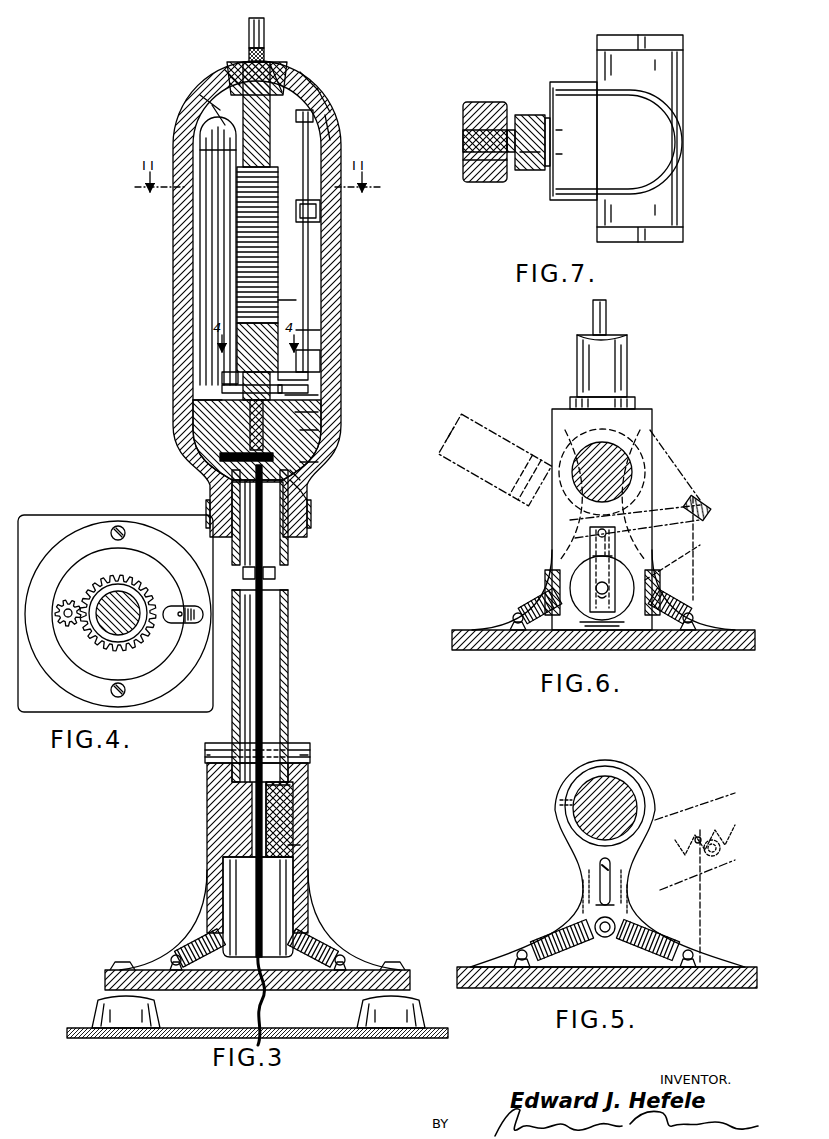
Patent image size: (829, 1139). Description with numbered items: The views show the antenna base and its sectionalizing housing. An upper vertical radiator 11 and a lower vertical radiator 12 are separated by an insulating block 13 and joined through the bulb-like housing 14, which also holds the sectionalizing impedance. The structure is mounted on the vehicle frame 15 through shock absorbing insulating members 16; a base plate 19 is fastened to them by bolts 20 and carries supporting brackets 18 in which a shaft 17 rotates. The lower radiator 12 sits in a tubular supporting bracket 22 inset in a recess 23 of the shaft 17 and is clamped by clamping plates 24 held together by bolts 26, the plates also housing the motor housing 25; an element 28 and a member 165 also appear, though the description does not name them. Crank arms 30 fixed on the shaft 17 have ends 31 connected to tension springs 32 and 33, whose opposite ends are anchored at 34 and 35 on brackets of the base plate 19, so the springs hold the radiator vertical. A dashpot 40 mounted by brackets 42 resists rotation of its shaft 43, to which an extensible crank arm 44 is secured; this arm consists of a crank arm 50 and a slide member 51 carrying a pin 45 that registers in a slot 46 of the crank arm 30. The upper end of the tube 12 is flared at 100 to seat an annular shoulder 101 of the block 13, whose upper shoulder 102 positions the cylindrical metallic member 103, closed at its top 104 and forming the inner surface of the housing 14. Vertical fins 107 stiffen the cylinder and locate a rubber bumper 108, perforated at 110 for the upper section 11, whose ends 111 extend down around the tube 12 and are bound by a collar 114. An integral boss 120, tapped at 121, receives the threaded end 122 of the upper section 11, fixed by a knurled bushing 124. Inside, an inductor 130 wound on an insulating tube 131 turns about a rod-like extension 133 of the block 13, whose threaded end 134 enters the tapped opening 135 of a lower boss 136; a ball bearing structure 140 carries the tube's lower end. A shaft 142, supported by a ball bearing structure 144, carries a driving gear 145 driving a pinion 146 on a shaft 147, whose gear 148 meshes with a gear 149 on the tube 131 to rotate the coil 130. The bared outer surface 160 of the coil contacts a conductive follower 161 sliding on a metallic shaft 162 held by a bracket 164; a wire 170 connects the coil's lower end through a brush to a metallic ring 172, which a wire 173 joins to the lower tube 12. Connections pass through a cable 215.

In FIG. 3, the upper vertical current radiator 11 is at (266, 26).
In FIG. 3, the lower vertical radiator 12 is at (290, 545).
In FIG. 6, the lower vertical radiator 12 is at (628, 352).
In FIG. 3, the insulating block 13 is at (322, 412).
In FIG. 4, the insulating block 13 is at (35, 710).
In FIG. 3, the bulb-like housing 14 is at (335, 300).
In FIG. 3, the frame 15 is at (180, 1030).
In FIG. 3, the shock absorbing insulating members 16 is at (98, 1002).
In FIG. 3, the shaft 17 is at (290, 800).
In FIG. 6, the shaft 17 is at (610, 460).
In FIG. 5, the shaft 17 is at (625, 790).
In FIG. 5, the supporting brackets 18 is at (655, 830).
In FIG. 3, the base plate 19 is at (408, 972).
In FIG. 6, the base plate 19 is at (712, 652).
In FIG. 5, the base plate 19 is at (748, 967).
In FIG. 3, the bolts 20 is at (120, 962).
In FIG. 3, the tubular supporting bracket 22 is at (290, 740).
In FIG. 6, the tubular supporting bracket 22 is at (634, 400).
In FIG. 3, the recess 23 is at (292, 786).
In FIG. 3, the clamping plates 24 is at (300, 845).
In FIG. 6, the clamping plates 24 is at (654, 415).
In FIG. 3, the motor housing 25 is at (225, 868).
In FIG. 3, the bolts 26 is at (312, 748).
In FIG. 3, the bore 28 is at (300, 828).
In FIG. 7, the crank arms 30 is at (488, 104).
In FIG. 6, the crank arms 30 is at (660, 450).
In FIG. 5, the crank arms 30 is at (632, 885).
In FIG. 5, the end of crank arm 31 is at (605, 938).
In FIG. 3, the tension spring 32 is at (200, 935).
In FIG. 6, the tension spring 32 is at (688, 602).
In FIG. 5, the tension spring 32 is at (690, 925).
In FIG. 3, the tension spring 33 is at (330, 940).
In FIG. 6, the tension spring 33 is at (525, 605).
In FIG. 5, the tension spring 33 is at (545, 930).
In FIG. 3, the spring anchor point 34 is at (346, 956).
In FIG. 6, the spring anchor point 34 is at (694, 616).
In FIG. 5, the spring anchor point 34 is at (694, 953).
In FIG. 3, the spring anchor point 35 is at (172, 955).
In FIG. 6, the spring anchor point 35 is at (512, 616).
In FIG. 5, the spring anchor point 35 is at (518, 951).
In FIG. 7, the dashpot 40 is at (655, 133).
In FIG. 6, the dashpot 40 is at (572, 610).
In FIG. 7, the brackets 42 is at (683, 68).
In FIG. 6, the brackets 42 is at (594, 590).
In FIG. 7, the shaft 43 is at (552, 168).
In FIG. 6, the shaft 43 is at (597, 586).
In FIG. 7, the extensible crank arm 44 is at (528, 172).
In FIG. 6, the extensible crank arm 44 is at (588, 548).
In FIG. 7, the pin 45 is at (470, 141).
In FIG. 6, the pin 45 is at (690, 518).
In FIG. 5, the pin 45 is at (600, 866).
In FIG. 7, the slot 46 is at (480, 172).
In FIG. 5, the slot 46 is at (598, 885).
In FIG. 7, the crank arm 50 is at (528, 113).
In FIG. 6, the crank arm 50 is at (662, 585).
In FIG. 7, the slide member 51 is at (516, 112).
In FIG. 6, the slide member 51 is at (590, 556).
In FIG. 3, the flared upper end 100 is at (318, 452).
In FIG. 3, the annular shoulder 101 is at (320, 444).
In FIG. 3, the upper annular recess 102 is at (322, 396).
In FIG. 3, the cylindrical metallic member 103 is at (300, 300).
In FIG. 3, the closed upper end 104 is at (330, 100).
In FIG. 3, the vertical fins 107 is at (313, 124).
In FIG. 3, the rubber bumper 108 is at (305, 72).
In FIG. 3, the perforation 110 is at (272, 70).
In FIG. 3, the bumper ends 111 is at (311, 527).
In FIG. 3, the collar 114 is at (312, 512).
In FIG. 3, the integral boss 120 is at (240, 68).
In FIG. 3, the tapped opening 121 is at (310, 372).
In FIG. 4, the tapped opening 121 is at (192, 625).
In FIG. 3, the threaded end 122 is at (278, 70).
In FIG. 3, the knurled bushing 124 is at (266, 52).
In FIG. 3, the inductor 130 is at (282, 240).
In FIG. 3, the insulating tube 131 is at (210, 138).
In FIG. 3, the rod-like extension 133 is at (218, 112).
In FIG. 3, the threaded upper end 134 is at (322, 92).
In FIG. 3, the tapped opening 135 is at (232, 78).
In FIG. 3, the lower integral boss 136 is at (215, 100).
In FIG. 3, the ball bearing structure 140 is at (250, 418).
In FIG. 3, the shaft 142 is at (270, 578).
In FIG. 6, the shaft 142 is at (606, 310).
In FIG. 3, the ball bearing structure 144 is at (305, 488).
In FIG. 3, the driving gear 145 is at (305, 496).
In FIG. 3, the pinion 146 is at (220, 457).
In FIG. 3, the shaft 147 is at (195, 400).
In FIG. 4, the shaft 147 is at (66, 620).
In FIG. 3, the gear 148 is at (222, 376).
In FIG. 4, the gear 148 is at (90, 630).
In FIG. 4, the gear 149 is at (128, 580).
In FIG. 3, the outer surface 160 is at (205, 128).
In FIG. 3, the conductive follower 161 is at (322, 208).
In FIG. 3, the vertical metallic shaft 162 is at (310, 150).
In FIG. 3, the bracket 164 is at (322, 336).
In FIG. 3, the envelope inner wall 165 is at (330, 118).
In FIG. 3, the wire 170 is at (322, 356).
In FIG. 4, the wire 170 is at (178, 620).
In FIG. 3, the metallic ring 172 is at (310, 388).
In FIG. 4, the metallic ring 172 is at (135, 535).
In FIG. 3, the wire 173 is at (322, 428).
In FIG. 3, the cable 215 is at (270, 1012).